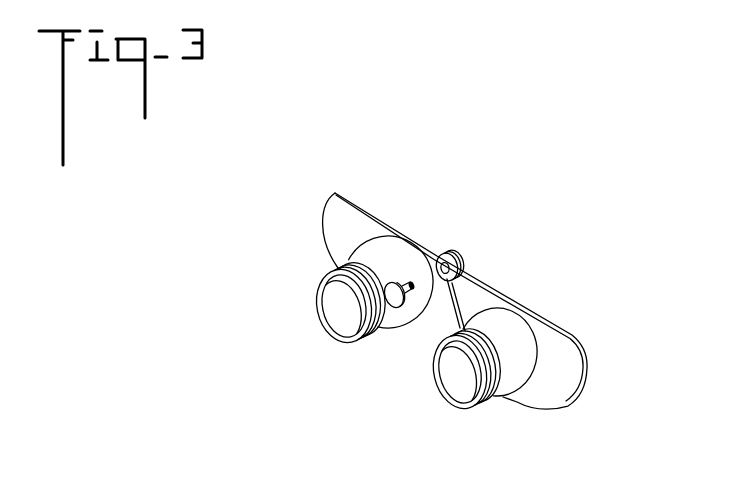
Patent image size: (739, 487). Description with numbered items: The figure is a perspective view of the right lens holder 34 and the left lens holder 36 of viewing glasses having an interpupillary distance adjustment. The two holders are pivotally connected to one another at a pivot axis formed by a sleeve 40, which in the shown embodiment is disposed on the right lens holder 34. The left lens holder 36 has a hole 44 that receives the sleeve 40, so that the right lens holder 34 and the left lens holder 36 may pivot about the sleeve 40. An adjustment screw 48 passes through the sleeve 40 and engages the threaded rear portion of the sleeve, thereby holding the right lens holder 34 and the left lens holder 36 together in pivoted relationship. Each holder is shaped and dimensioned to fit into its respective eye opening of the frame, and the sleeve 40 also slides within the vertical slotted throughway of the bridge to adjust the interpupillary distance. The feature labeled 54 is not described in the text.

The right lens holder 34 is at (330, 228).
The left lens holder 36 is at (550, 405).
The sleeve 40 is at (441, 254).
The hole 44 is at (452, 272).
The adjustment screw 48 is at (396, 291).
The threaded connector 54 is at (332, 300).